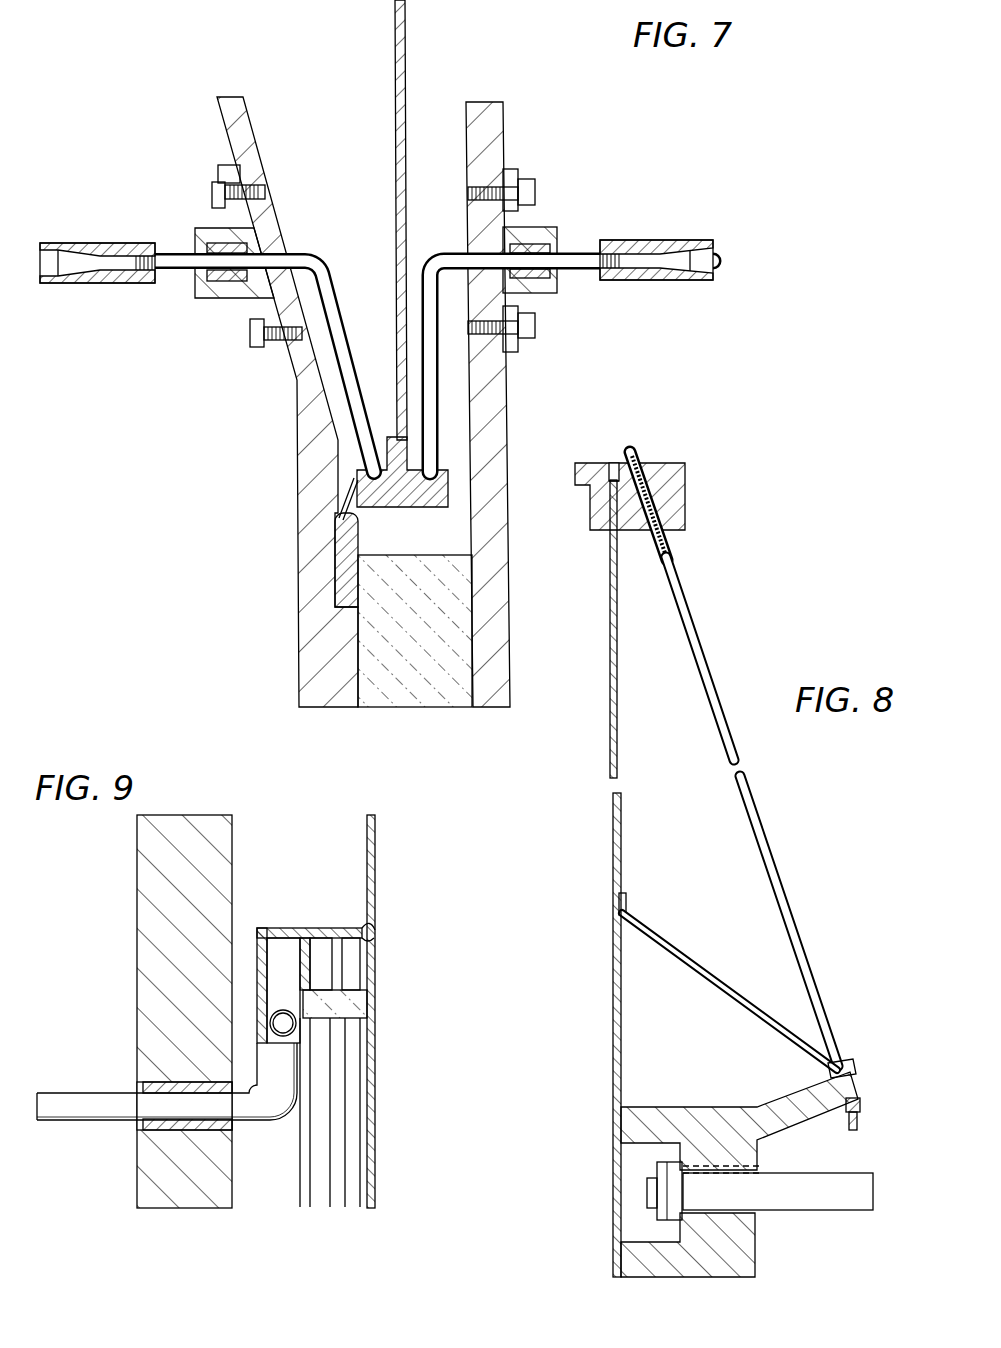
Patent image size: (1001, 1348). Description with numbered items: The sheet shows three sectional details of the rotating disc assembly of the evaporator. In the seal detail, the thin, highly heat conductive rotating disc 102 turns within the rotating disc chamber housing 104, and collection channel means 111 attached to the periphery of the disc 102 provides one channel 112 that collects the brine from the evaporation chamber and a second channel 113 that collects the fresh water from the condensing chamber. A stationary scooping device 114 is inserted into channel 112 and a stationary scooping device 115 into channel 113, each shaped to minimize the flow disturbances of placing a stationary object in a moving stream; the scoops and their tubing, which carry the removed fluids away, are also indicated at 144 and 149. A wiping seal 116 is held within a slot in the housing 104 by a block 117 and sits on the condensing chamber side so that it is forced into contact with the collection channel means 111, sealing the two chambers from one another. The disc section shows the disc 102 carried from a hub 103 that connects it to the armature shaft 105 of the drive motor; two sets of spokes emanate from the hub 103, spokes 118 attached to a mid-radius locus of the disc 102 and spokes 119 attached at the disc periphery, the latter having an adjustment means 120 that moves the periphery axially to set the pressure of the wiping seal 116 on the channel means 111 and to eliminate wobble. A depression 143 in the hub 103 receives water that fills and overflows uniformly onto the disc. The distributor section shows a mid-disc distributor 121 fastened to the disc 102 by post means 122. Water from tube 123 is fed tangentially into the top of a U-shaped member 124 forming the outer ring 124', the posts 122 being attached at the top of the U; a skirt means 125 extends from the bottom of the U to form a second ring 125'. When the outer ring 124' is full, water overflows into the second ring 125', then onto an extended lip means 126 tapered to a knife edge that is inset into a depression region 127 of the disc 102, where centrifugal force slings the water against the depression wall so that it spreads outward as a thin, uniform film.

In FIG. 7, the rotating disc 102 is at (408, 28).
In FIG. 8, the rotating disc 102 is at (610, 647).
In FIG. 9, the rotating disc 102 is at (375, 862).
In FIG. 8, the hub 103 is at (622, 1121).
In FIG. 7, the rotating disc chamber housing 104 is at (497, 126).
In FIG. 9, the rotating disc chamber housing 104 is at (142, 878).
In FIG. 8, the armature shaft 105 is at (826, 1212).
In FIG. 7, the collection channel means 111 is at (448, 494).
In FIG. 8, the collection channel means 111 is at (680, 491).
In FIG. 7, the channel 112 is at (440, 476).
In FIG. 8, the channel 112 is at (590, 462).
In FIG. 7, the second channel 113 is at (356, 471).
In FIG. 7, the stationary scooping device 114 is at (432, 452).
In FIG. 7, the stationary scooping device 115 is at (362, 452).
In FIG. 7, the wiping seal 116 is at (338, 496).
In FIG. 7, the block 117 is at (348, 565).
In FIG. 8, the spokes 118 is at (688, 956).
In FIG. 8, the spokes 119 is at (758, 811).
In FIG. 8, the adjustment means 120 is at (646, 456).
In FIG. 9, the mid-disc distributor 121 is at (264, 930).
In FIG. 9, the post means 122 is at (360, 1010).
In FIG. 9, the tube 123 is at (87, 1128).
In FIG. 9, the U-shaped member 124 is at (191, 990).
In FIG. 9, the outer ring 124' is at (185, 1017).
In FIG. 9, the skirt means 125 is at (288, 958).
In FIG. 9, the second ring 125' is at (335, 923).
In FIG. 9, the extended lip means 126 is at (368, 928).
In FIG. 9, the depression region 127 is at (378, 936).
In FIG. 8, the depression 143 is at (630, 1233).
In FIG. 7, the tube 144 is at (582, 250).
In FIG. 7, the tube 149 is at (317, 278).